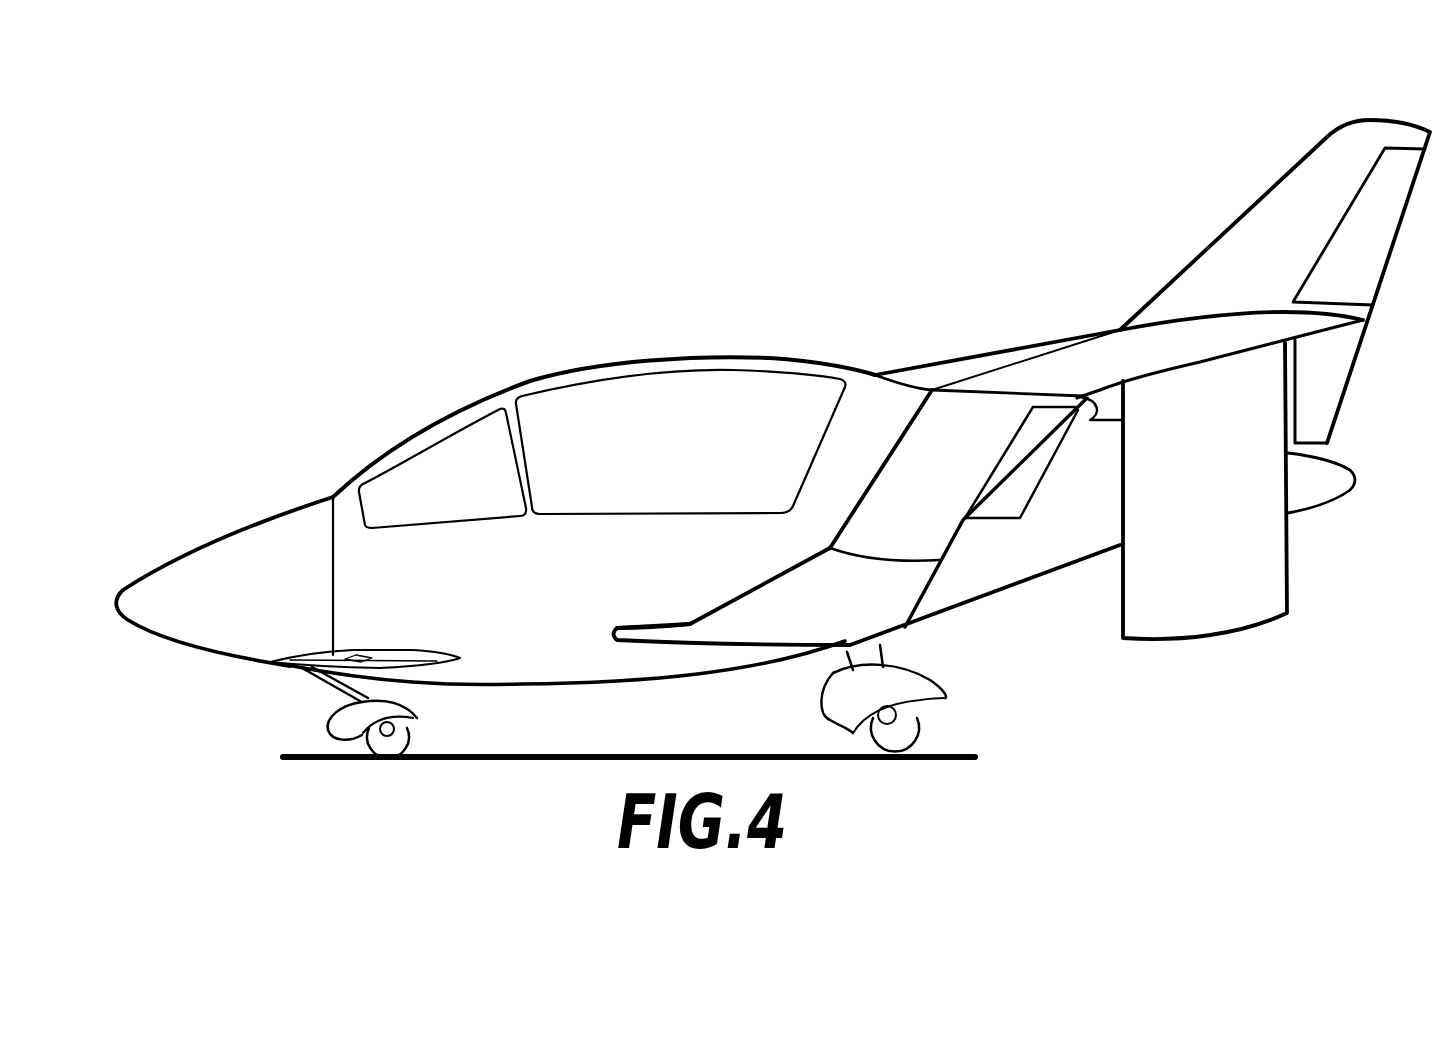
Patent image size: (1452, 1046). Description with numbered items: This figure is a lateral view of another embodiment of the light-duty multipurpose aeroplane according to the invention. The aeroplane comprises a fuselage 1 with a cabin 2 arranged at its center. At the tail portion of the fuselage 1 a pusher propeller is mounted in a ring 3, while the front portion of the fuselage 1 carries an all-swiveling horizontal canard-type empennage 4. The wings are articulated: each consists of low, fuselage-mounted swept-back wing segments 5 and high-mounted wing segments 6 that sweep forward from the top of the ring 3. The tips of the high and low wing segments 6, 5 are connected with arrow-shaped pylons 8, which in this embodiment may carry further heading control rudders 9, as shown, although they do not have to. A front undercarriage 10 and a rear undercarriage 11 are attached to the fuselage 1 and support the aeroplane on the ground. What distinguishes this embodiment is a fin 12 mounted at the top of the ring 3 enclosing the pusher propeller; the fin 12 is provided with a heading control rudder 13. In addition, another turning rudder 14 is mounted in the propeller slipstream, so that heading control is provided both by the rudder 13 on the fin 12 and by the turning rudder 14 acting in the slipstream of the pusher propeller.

The fuselage 1 is at (287, 537).
The cabin 2 is at (592, 396).
The ring 3 is at (1260, 590).
The canard type empennage 4 is at (293, 667).
The swept-back wing segments 5 is at (890, 587).
The high-mounted wing segments 6 is at (1107, 352).
The arrow-shaped pylons 8 is at (947, 423).
The heading control rudders 9 is at (1032, 443).
The front undercarriage 10 is at (410, 702).
The rear undercarriage 11 is at (863, 692).
The fin 12 is at (1237, 243).
The heading control rudder 13 is at (1363, 220).
The turning rudder 14 is at (1322, 430).